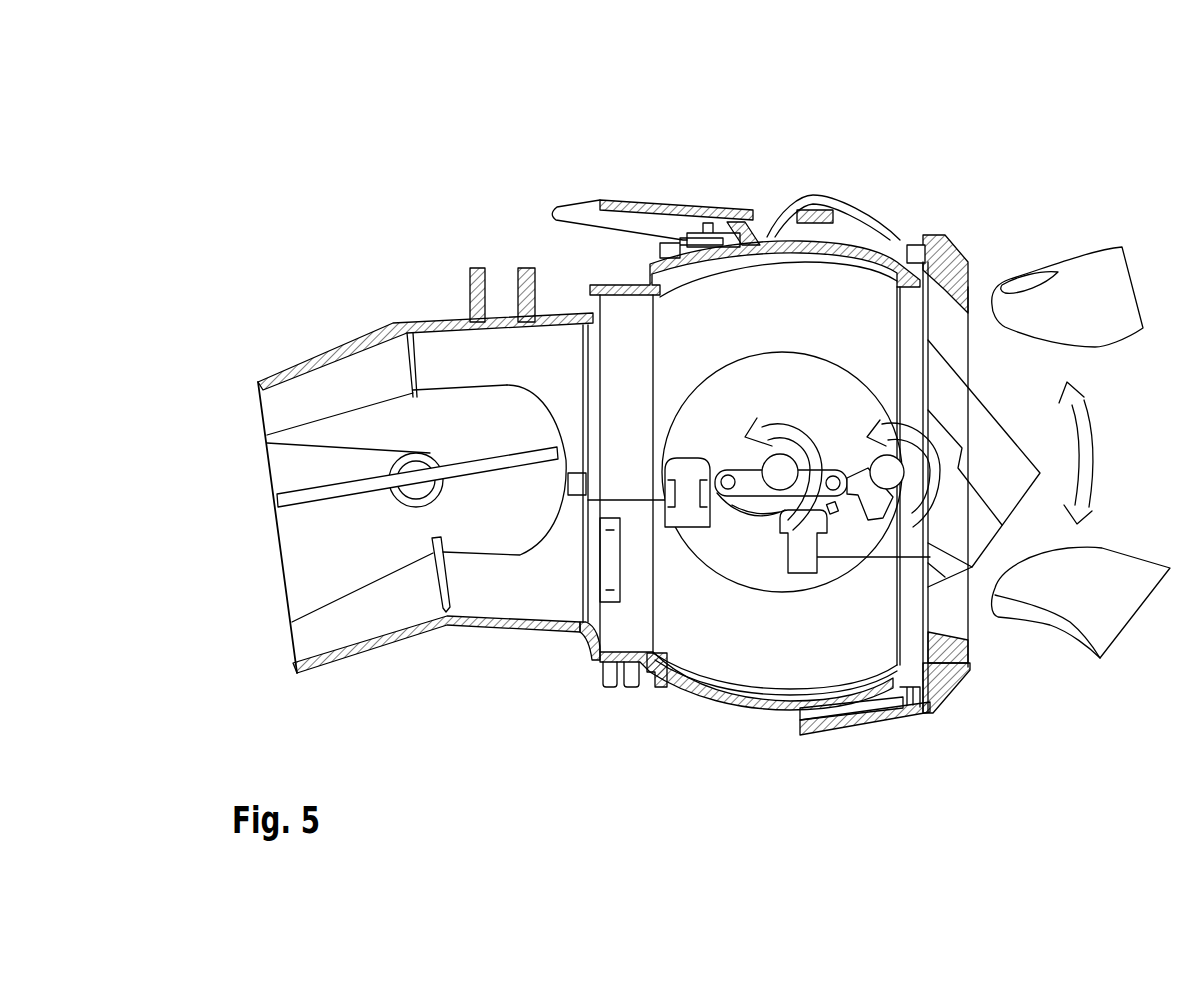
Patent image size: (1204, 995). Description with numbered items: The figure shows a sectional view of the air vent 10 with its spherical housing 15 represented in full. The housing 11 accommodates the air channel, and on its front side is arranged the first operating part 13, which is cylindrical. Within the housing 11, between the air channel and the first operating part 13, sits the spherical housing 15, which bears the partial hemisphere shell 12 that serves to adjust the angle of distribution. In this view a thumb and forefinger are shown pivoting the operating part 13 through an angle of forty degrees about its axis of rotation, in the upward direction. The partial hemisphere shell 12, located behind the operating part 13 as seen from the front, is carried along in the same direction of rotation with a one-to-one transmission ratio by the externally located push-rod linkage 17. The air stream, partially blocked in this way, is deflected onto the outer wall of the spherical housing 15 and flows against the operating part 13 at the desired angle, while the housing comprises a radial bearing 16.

The air vent 10 is at (322, 133).
The housing 11 is at (322, 362).
The partial hemisphere shell 12 is at (583, 478).
The first operating part 13 is at (992, 427).
The spherical housing 15 is at (620, 398).
The radial bearing 16 is at (613, 287).
The push-rod linkage 17 is at (760, 507).